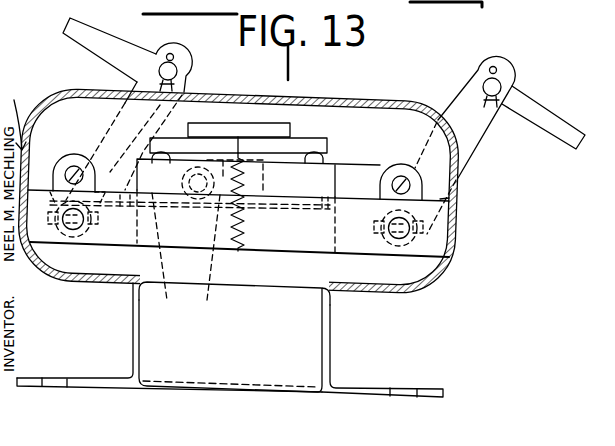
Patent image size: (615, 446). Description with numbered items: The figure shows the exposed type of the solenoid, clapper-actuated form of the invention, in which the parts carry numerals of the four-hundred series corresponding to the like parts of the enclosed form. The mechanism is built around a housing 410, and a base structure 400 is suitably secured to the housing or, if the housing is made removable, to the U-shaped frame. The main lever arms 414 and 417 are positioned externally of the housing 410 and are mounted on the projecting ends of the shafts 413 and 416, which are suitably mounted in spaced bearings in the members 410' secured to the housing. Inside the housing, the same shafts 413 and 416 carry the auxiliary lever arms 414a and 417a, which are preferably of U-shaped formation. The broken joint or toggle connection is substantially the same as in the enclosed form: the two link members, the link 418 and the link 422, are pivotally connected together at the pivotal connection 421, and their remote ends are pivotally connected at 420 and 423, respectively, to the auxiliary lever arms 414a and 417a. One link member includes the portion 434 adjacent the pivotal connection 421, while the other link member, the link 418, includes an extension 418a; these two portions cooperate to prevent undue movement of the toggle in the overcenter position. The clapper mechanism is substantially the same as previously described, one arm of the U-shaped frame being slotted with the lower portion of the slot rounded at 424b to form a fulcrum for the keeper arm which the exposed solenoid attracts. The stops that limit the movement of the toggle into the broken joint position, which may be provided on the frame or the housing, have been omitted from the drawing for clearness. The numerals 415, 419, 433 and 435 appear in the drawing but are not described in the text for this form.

The base structure 400 is at (331, 346).
The housing 410 is at (238, 184).
The bearing members 410' is at (319, 286).
The shaft 413 is at (73, 229).
The main lever arm 414 is at (182, 78).
The auxiliary lever arm 414a is at (17, 116).
The lever 415 is at (88, 40).
The shaft 416 is at (400, 238).
The main lever arm 417 is at (482, 128).
The auxiliary lever arm 417a is at (449, 198).
The link 418 is at (107, 125).
The link extension 418a is at (262, 196).
The lever 419 is at (543, 118).
The pivotal connection 420 is at (65, 150).
The pivotal connection 421 is at (212, 264).
The link 422 is at (360, 170).
The pivotal connection 423 is at (400, 176).
The rounded slot portion 424b is at (165, 150).
The spring 433 is at (248, 226).
The link portion 434 is at (258, 153).
The link 435 is at (168, 259).